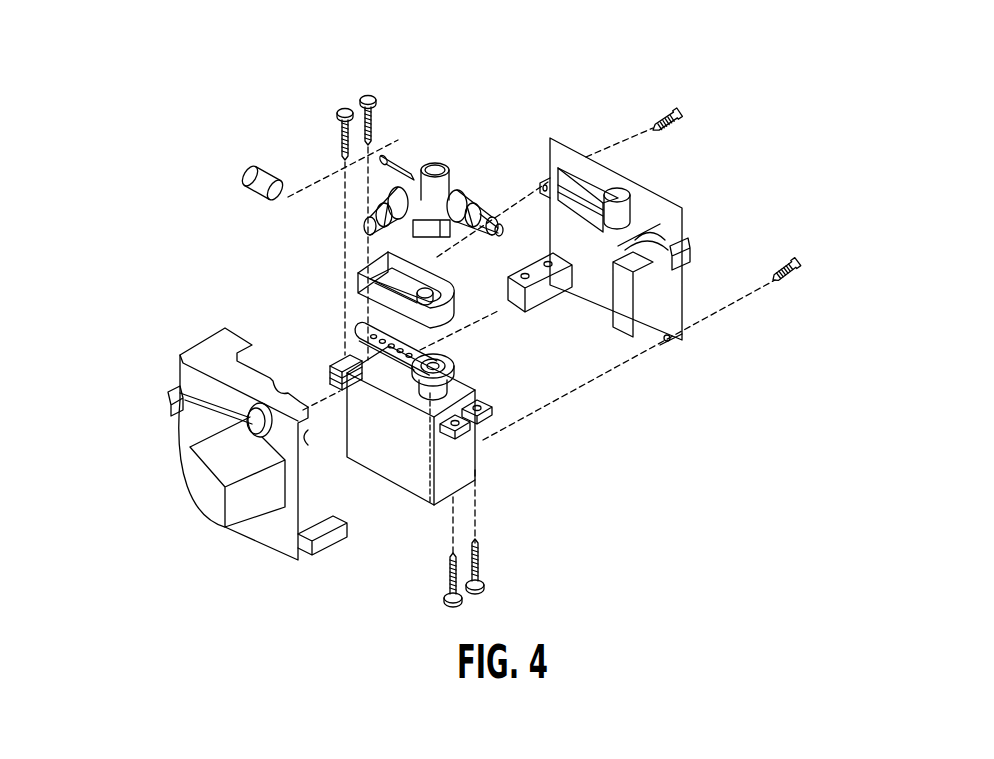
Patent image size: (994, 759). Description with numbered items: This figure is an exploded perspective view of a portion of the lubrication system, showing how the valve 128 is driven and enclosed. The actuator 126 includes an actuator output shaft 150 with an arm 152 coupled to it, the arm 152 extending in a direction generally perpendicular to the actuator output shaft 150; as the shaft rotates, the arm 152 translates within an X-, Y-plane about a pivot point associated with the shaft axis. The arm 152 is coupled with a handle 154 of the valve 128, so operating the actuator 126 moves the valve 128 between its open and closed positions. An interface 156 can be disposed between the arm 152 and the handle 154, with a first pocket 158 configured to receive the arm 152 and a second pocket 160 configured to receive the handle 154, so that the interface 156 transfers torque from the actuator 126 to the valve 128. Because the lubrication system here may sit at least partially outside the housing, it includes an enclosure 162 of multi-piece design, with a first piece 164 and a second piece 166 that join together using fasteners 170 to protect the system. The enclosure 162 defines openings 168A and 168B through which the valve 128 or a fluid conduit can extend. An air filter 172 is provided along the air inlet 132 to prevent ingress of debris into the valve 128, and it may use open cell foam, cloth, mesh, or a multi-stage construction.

The actuator 126 is at (333, 352).
The valve 128 is at (363, 188).
The air inlet 132 is at (395, 172).
The actuator output shaft 150 is at (455, 372).
The arm 152 is at (360, 328).
The handle 154 is at (456, 237).
The interface 156 is at (473, 332).
The first pocket 158 is at (500, 308).
The second pocket 160 is at (387, 265).
The enclosure 162 is at (682, 338).
The first piece 164 is at (357, 537).
The second piece 166 is at (683, 353).
The opening 168A is at (256, 421).
The opening 168B is at (682, 232).
The fasteners 170 is at (680, 110).
The air filter 172 is at (246, 174).